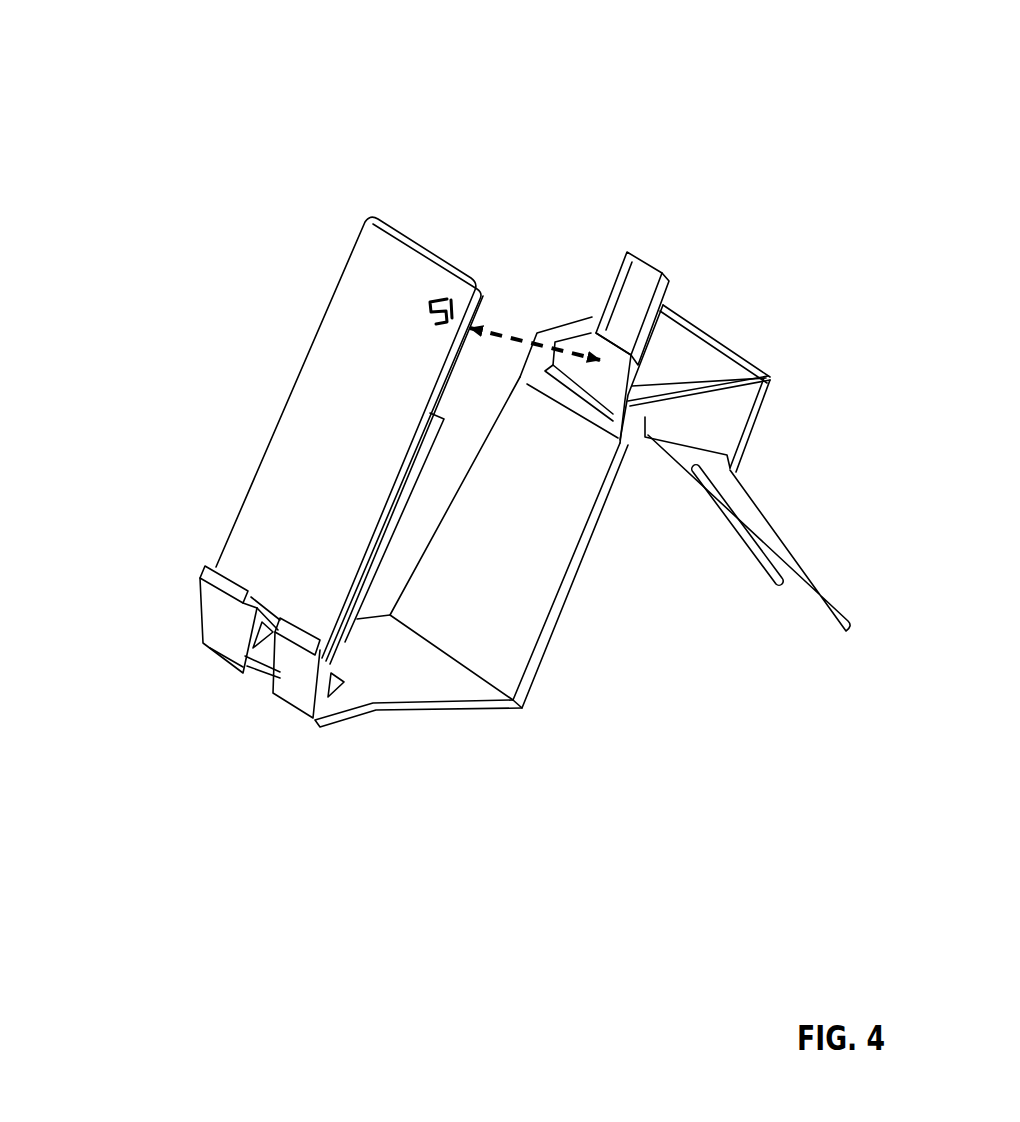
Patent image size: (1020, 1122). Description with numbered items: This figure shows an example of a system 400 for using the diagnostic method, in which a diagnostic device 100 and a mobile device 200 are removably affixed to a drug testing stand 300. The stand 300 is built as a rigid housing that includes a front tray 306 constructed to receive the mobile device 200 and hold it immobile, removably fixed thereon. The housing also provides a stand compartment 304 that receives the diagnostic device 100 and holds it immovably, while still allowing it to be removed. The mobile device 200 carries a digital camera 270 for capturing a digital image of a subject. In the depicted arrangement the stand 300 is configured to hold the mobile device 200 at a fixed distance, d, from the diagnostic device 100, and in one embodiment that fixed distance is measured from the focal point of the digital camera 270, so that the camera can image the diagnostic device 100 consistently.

The assembly 400 is at (530, 133).
The diagnostic device 100 is at (660, 246).
The mobile device 200 is at (330, 335).
The digital camera 270 is at (424, 293).
The drug testing stand 300 is at (588, 572).
The stand compartment 304 is at (705, 341).
The front tray 306 is at (203, 598).